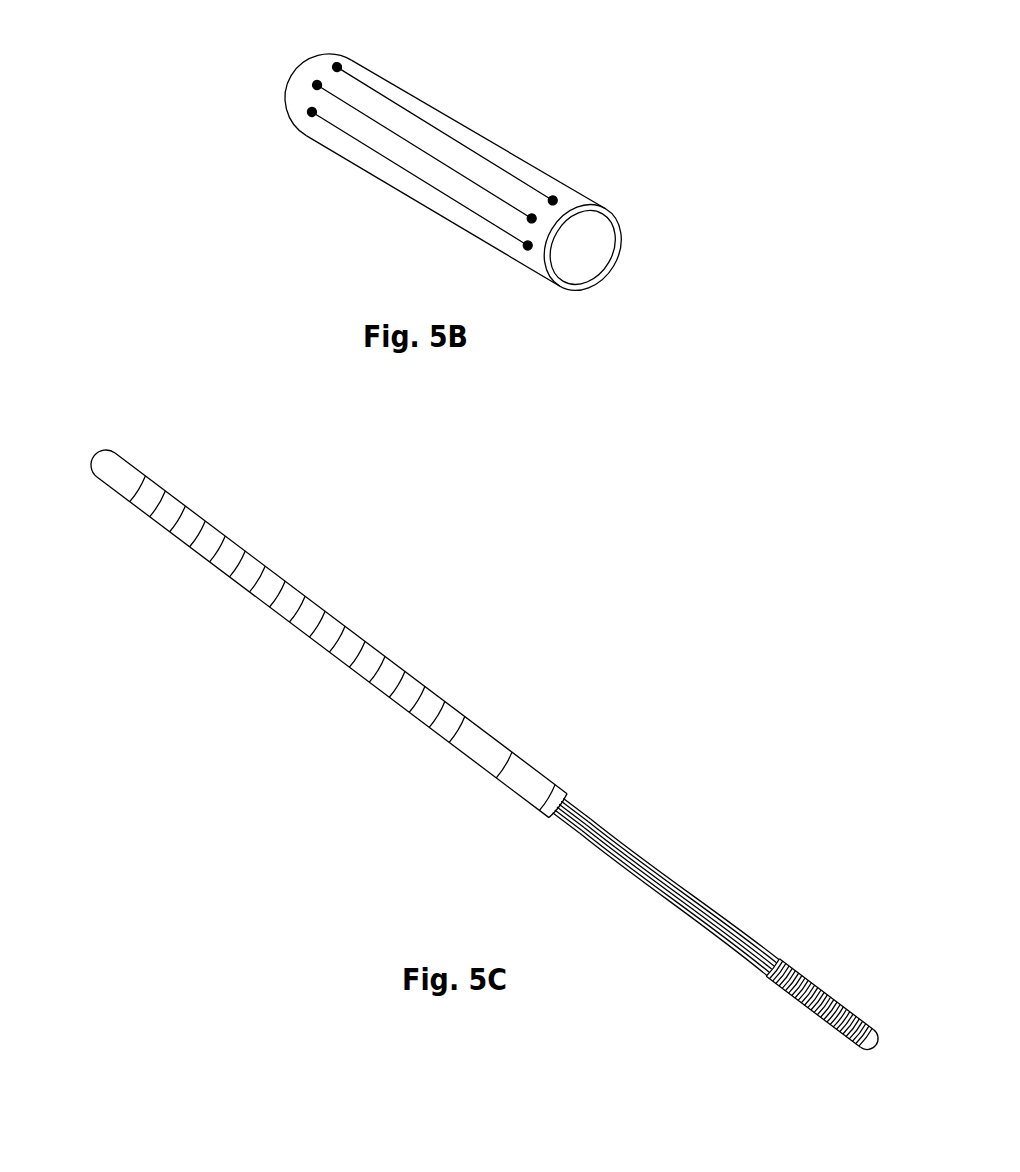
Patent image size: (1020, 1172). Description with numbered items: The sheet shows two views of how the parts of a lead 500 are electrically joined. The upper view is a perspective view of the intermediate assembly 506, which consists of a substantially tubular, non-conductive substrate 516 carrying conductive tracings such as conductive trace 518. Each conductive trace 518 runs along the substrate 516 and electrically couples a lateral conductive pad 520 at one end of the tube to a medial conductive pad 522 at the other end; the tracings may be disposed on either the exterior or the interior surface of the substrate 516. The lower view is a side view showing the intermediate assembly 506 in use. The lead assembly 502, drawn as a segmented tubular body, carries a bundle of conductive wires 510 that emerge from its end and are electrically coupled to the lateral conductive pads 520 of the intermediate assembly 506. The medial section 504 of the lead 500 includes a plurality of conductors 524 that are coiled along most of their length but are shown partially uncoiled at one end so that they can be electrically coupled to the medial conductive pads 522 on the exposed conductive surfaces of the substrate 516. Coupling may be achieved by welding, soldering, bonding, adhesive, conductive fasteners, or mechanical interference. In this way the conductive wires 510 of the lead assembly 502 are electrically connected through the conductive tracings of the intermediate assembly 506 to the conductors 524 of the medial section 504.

In FIG. 5C, the lead 500 is at (484, 749).
In FIG. 5C, the lead assembly 502 is at (399, 616).
In FIG. 5C, the medial section 504 is at (824, 948).
In FIG. 5B, the intermediate assembly 506 is at (514, 98).
In FIG. 5C, the intermediate assembly 506 is at (710, 835).
In FIG. 5C, the conductive wires 510 is at (600, 800).
In FIG. 5B, the substrate 516 is at (393, 185).
In FIG. 5B, the conductive trace 518 is at (413, 110).
In FIG. 5B, the lateral conductive pad 520 is at (340, 62).
In FIG. 5B, the medial conductive pad 522 is at (557, 197).
In FIG. 5C, the conductors 524 is at (835, 980).